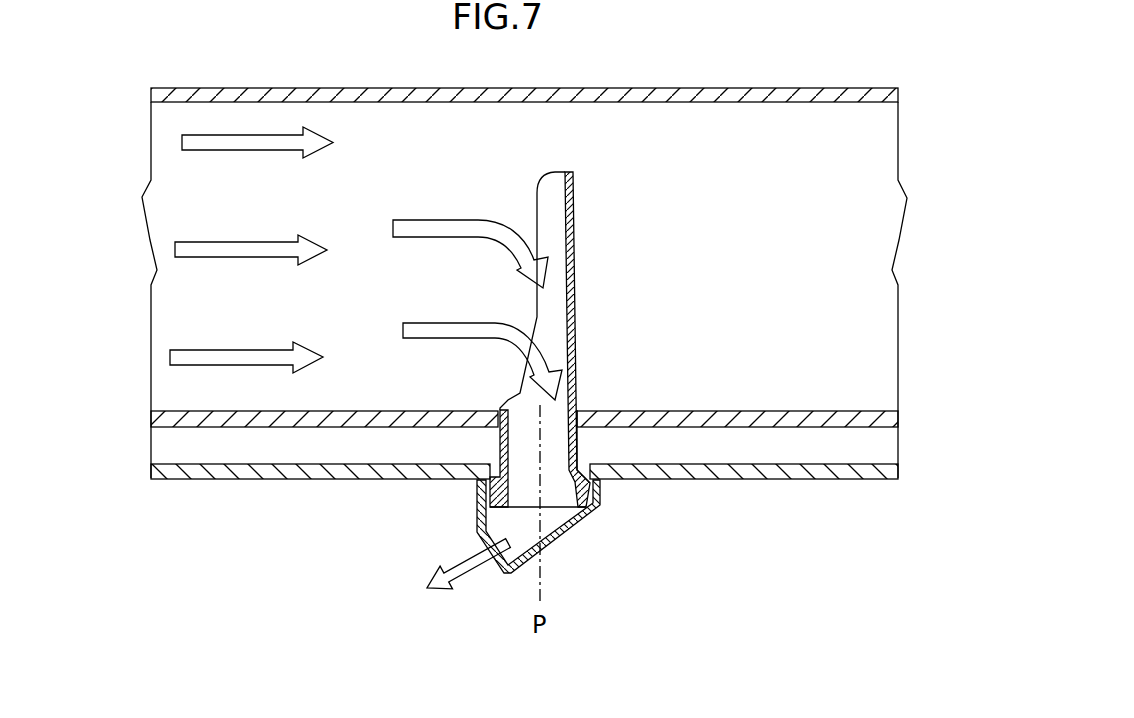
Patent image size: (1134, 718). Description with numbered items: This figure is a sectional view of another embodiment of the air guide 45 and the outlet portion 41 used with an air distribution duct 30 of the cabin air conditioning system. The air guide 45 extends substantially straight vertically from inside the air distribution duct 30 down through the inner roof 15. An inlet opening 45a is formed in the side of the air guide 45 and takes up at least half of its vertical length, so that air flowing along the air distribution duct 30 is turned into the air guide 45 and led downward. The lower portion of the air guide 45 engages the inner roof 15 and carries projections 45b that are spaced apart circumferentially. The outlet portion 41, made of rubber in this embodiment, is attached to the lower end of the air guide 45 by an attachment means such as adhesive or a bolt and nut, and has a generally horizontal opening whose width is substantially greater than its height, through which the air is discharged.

The air distribution duct 30 is at (670, 88).
The inner roof 15 is at (727, 478).
The air guide 45 is at (577, 264).
The inlet opening 45a is at (525, 300).
The projections 45b is at (607, 410).
The outlet portion 41 is at (573, 523).